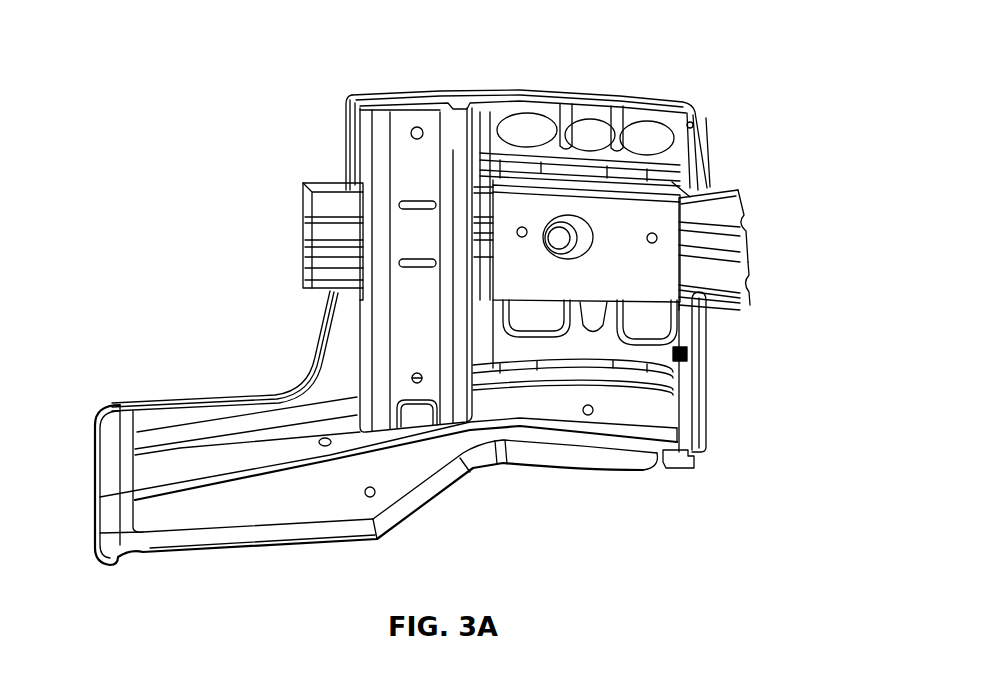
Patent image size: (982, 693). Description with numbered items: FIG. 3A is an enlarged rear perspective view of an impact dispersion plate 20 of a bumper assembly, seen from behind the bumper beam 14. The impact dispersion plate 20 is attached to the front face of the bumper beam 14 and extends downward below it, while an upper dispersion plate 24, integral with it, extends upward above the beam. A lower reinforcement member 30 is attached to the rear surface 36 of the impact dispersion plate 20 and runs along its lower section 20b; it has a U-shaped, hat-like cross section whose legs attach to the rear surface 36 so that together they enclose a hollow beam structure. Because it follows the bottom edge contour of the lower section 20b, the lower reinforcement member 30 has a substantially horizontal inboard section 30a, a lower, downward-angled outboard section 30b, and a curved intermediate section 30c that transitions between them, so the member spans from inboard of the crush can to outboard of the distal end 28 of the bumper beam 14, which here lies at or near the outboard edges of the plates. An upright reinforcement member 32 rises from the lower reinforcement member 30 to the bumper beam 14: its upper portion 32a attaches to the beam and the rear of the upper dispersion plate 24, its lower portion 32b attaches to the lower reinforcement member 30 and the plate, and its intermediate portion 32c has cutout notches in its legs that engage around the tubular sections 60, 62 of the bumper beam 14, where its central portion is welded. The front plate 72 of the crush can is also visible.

The bumper beam 14 is at (735, 174).
The impact dispersion plate 20 is at (712, 466).
The lower section of the impact dispersion plate 20b is at (714, 383).
The upper dispersion plate 24 is at (663, 88).
The distal end of the bumper beam 28 is at (329, 181).
The lower reinforcement member 30 is at (403, 443).
The inboard section of the lower reinforcement member 30a is at (585, 449).
The outboard section of the lower reinforcement member 30b is at (222, 492).
The intermediate section of the lower reinforcement member 30c is at (521, 441).
The upright reinforcement member 32 is at (338, 306).
The upper portion of the upright reinforcement member 32a is at (363, 150).
The lower portion of the upright reinforcement member 32b is at (345, 361).
The intermediate portion of the upright reinforcement member 32c is at (336, 211).
The rear surface of the impact dispersion plate 36 is at (192, 418).
The tubular section of the bumper beam 60 is at (747, 230).
The tubular section of the bumper beam 62 is at (747, 289).
The front plate 72 is at (548, 205).